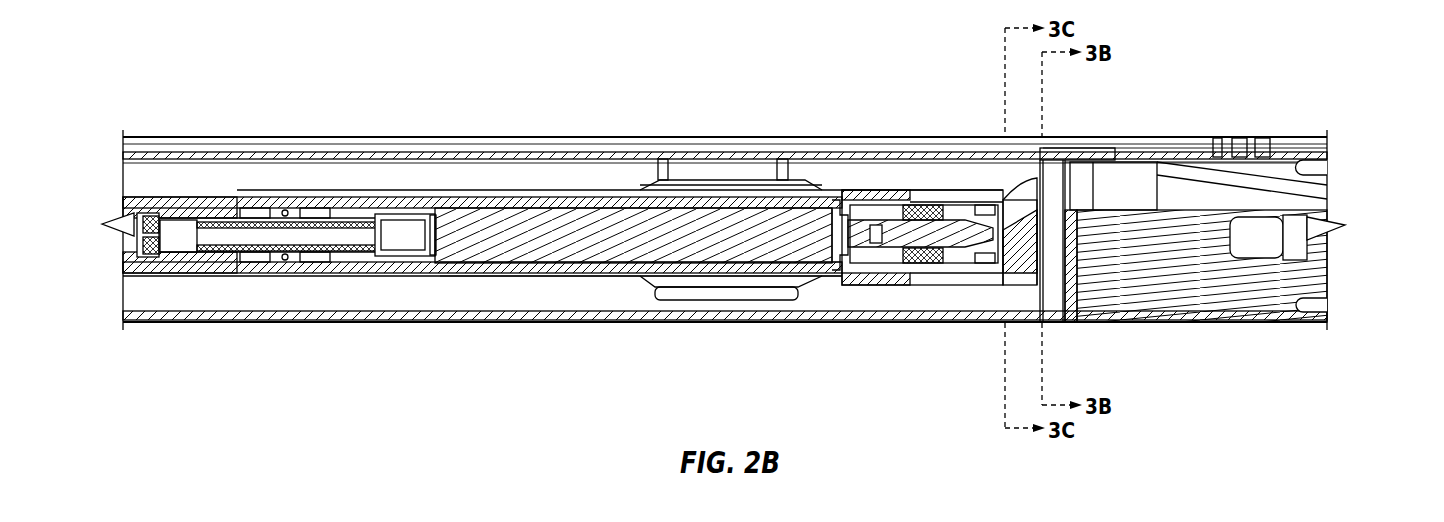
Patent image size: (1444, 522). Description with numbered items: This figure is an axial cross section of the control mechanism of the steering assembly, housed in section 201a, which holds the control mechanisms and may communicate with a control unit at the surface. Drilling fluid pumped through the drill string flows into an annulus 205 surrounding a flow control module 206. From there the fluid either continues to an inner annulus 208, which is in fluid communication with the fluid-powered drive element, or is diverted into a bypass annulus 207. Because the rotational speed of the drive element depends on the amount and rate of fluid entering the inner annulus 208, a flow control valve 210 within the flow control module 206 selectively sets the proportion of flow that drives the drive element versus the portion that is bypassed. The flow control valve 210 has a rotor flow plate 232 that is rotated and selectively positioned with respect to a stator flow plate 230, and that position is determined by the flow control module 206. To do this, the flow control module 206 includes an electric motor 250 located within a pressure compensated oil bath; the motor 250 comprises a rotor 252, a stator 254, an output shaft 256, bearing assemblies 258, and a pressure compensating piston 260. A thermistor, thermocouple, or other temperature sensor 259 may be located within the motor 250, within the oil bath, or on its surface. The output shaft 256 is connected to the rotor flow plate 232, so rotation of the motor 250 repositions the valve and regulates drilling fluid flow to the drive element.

The section 201a is at (441, 137).
The annulus 205 is at (271, 178).
The flow control module 206 is at (543, 190).
The bypass annulus 207 is at (1320, 168).
The inner annulus 208 is at (1320, 198).
The flow control valve 210 is at (1048, 137).
The stator flow plate 230 is at (1073, 137).
The rotor flow plate 232 is at (1027, 183).
The electric motor 250 is at (470, 273).
The rotor 252 is at (578, 253).
The stator 254 is at (527, 268).
The output shaft 256 is at (870, 258).
The bearing assemblies 258 is at (933, 273).
The temperature sensor 259 is at (832, 190).
The pressure compensating piston 260 is at (388, 258).